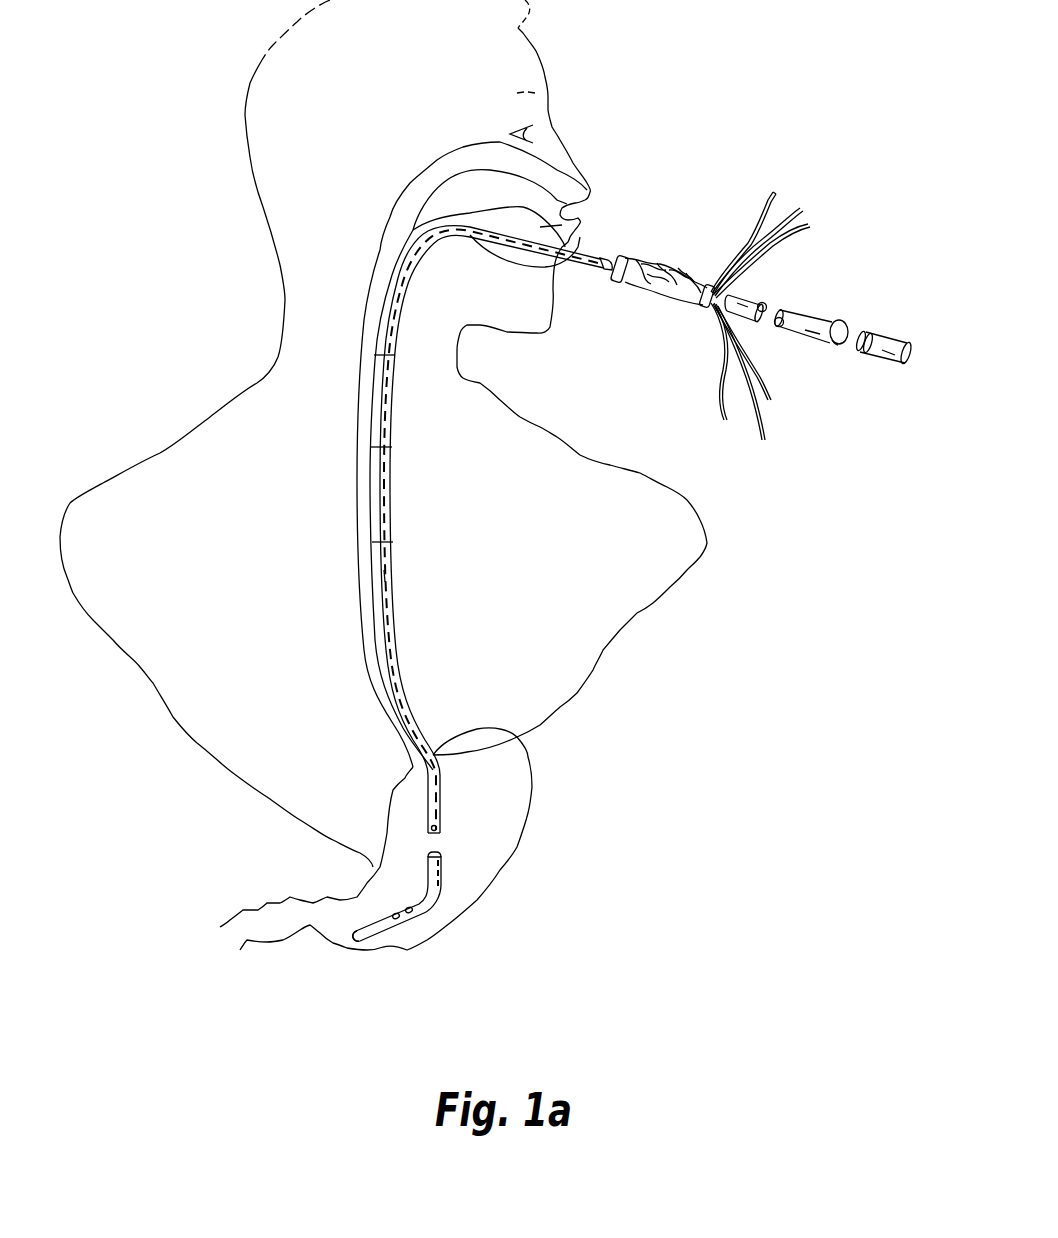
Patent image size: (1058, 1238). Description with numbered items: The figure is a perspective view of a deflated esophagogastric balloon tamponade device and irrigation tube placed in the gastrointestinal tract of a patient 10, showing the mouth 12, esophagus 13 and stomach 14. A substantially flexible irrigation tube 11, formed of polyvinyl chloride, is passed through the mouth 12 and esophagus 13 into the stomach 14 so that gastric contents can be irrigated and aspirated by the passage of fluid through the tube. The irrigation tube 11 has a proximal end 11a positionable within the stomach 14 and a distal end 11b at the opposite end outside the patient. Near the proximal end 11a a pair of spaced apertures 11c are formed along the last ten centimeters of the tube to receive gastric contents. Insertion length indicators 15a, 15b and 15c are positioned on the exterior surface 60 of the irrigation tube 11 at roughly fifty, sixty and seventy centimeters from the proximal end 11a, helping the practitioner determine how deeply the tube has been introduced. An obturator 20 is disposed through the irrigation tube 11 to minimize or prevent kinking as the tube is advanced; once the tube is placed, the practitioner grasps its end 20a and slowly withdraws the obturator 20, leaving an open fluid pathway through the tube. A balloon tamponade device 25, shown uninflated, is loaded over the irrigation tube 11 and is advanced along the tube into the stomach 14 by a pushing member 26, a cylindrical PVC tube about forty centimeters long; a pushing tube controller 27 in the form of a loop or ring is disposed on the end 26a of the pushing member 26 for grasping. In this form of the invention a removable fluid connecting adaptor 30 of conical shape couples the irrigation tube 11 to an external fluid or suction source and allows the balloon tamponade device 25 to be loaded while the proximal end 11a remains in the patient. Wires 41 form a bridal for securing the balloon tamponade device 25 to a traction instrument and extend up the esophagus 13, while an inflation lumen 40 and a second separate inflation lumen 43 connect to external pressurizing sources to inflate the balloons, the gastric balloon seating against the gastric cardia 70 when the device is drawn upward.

The patient 10 is at (557, 433).
The irrigation tube 11 is at (585, 250).
The proximal end 11a is at (383, 935).
The distal end 11b is at (592, 274).
The spaced apertures 11c is at (413, 905).
The mouth 12 is at (593, 203).
The esophagus 13 is at (373, 672).
The stomach 14 is at (520, 803).
The insertion length indicator 15a is at (382, 542).
The insertion length indicator 15b is at (382, 447).
The insertion length indicator 15c is at (390, 356).
The obturator 20 is at (641, 256).
The end 20a is at (612, 293).
The balloon tamponade device 25 is at (683, 273).
The pushing member 26 is at (753, 295).
The end 26a is at (835, 343).
The pushing tube controller 27 is at (836, 315).
The fluid connecting adaptor 30 is at (890, 363).
The inflation lumen 40 is at (772, 192).
The wires 41 is at (803, 207).
The second inflation lumen 43 is at (718, 418).
The exterior surface 60 is at (388, 575).
The gastric cardia 70 is at (515, 736).